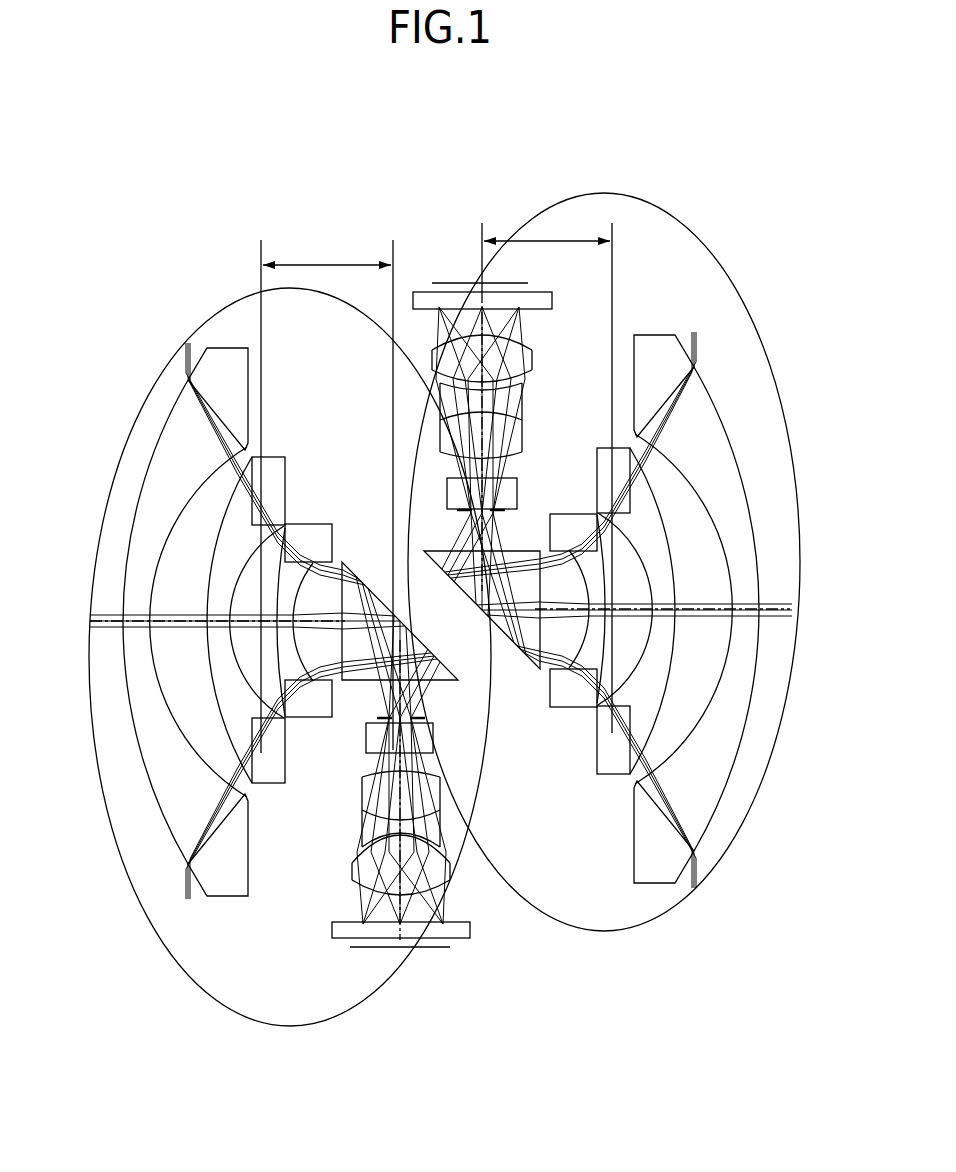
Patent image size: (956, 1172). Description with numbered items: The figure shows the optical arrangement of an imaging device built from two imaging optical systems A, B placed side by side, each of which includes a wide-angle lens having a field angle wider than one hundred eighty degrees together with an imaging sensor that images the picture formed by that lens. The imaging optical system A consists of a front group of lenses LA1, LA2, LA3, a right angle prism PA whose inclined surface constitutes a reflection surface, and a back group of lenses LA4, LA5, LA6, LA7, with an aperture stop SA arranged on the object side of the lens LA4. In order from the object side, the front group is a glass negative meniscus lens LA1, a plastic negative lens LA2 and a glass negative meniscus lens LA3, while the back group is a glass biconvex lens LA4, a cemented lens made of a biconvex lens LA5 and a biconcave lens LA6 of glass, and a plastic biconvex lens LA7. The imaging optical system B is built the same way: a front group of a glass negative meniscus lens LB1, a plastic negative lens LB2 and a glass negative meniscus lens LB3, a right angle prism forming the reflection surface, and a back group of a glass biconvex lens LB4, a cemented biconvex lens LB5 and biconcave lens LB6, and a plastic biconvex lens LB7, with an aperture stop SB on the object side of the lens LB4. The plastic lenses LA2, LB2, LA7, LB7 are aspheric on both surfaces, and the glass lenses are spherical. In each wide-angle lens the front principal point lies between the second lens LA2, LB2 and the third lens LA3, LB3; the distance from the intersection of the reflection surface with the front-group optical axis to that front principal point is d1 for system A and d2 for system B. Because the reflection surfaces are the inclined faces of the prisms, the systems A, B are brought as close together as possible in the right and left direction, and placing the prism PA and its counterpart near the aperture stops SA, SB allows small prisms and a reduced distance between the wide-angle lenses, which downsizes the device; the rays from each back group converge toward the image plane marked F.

The imaging optical system A is at (112, 460).
The imaging optical system B is at (790, 412).
The distance d1 is at (327, 495).
The distance d2 is at (547, 475).
The negative meniscus lens LA1 is at (237, 885).
The negative lens LA2 is at (273, 456).
The negative meniscus lens LA3 is at (318, 524).
The biconvex lens LA4 is at (367, 742).
The biconvex lens LA5 is at (363, 793).
The biconcave lens LA6 is at (363, 828).
The biconvex lens LA7 is at (357, 873).
The negative meniscus lens LB1 is at (643, 860).
The negative lens LB2 is at (613, 770).
The negative meniscus lens LB3 is at (570, 706).
The biconvex lens LB4 is at (517, 492).
The biconvex lens LB5 is at (522, 436).
The biconcave lens LB6 is at (522, 404).
The biconvex lens LB7 is at (533, 362).
The right angle prism PA is at (348, 683).
The aperture stop SA is at (425, 718).
The aperture stop SB is at (455, 291).
The image plane / filter F is at (550, 301).